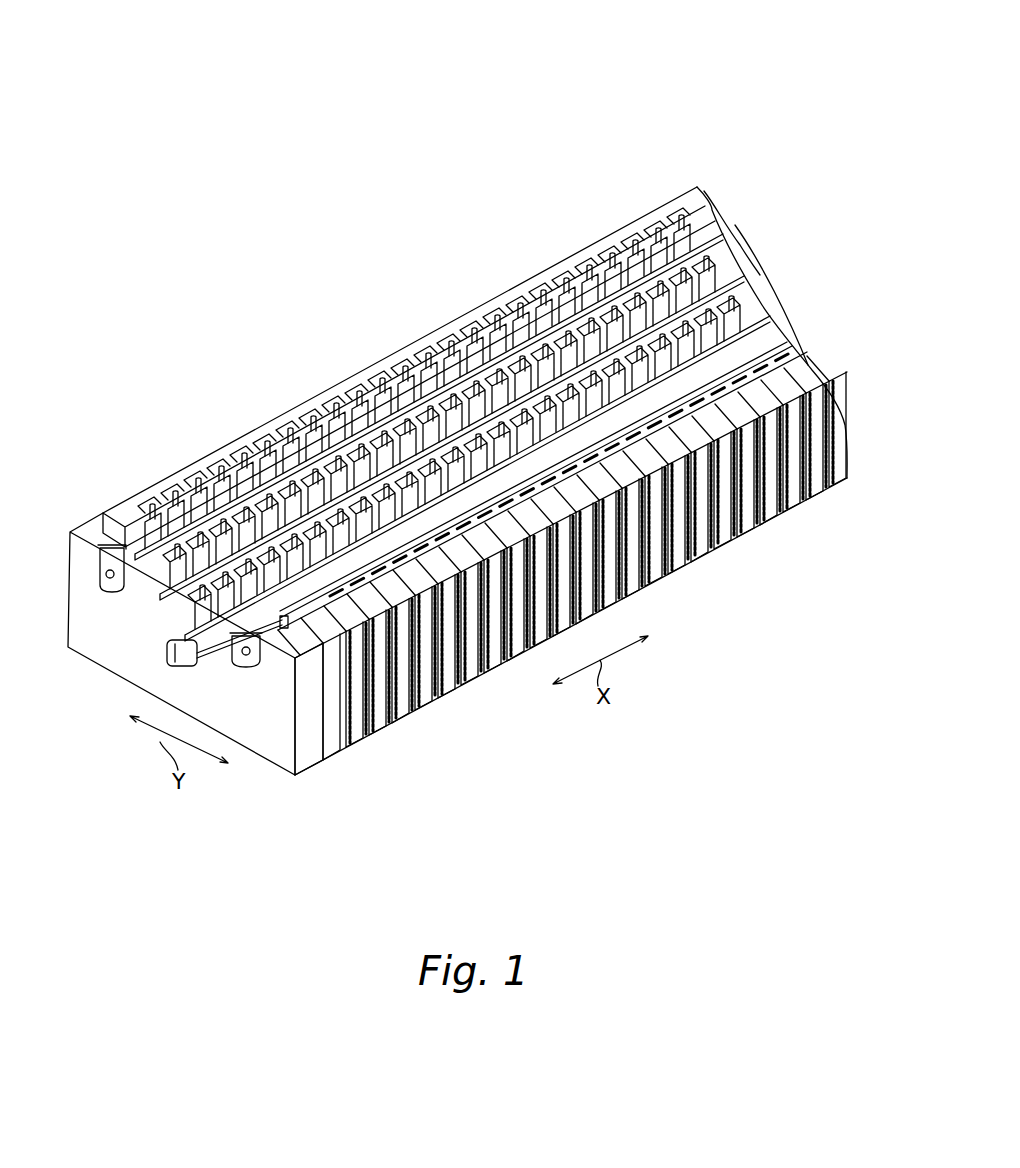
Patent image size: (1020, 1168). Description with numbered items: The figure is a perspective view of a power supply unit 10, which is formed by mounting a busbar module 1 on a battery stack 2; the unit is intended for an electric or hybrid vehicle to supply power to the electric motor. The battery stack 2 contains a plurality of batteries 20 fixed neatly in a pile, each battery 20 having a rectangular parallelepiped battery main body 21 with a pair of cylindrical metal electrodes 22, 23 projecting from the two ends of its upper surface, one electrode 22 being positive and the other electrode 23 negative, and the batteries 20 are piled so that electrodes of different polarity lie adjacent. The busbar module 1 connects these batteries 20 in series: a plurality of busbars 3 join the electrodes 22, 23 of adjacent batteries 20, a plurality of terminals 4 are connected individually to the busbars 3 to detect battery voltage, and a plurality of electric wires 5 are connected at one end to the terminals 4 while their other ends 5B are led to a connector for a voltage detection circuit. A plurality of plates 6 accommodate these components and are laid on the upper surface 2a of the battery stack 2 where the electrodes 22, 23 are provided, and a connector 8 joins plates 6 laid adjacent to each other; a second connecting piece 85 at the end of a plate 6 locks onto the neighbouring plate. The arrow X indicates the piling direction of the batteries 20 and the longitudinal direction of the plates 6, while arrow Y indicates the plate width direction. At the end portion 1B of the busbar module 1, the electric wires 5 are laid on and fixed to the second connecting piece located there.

The busbar module 1 is at (588, 131).
The power supply unit 10 is at (650, 73).
The end portion of the busbar module 1B is at (310, 768).
The battery stack 2 is at (844, 404).
The upper surface of the battery unit 2a is at (803, 352).
The battery 20 is at (768, 524).
The battery main body 21 is at (840, 390).
The electrode 22 is at (670, 228).
The electrode 23 is at (700, 222).
The busbar 3 is at (210, 490).
The terminal 4 is at (217, 493).
The electric wire 5 is at (240, 667).
The other end of the electric wire 5B is at (193, 667).
The plate 6 is at (212, 371).
The connector 8 is at (283, 636).
The second connecting piece 85 is at (300, 625).